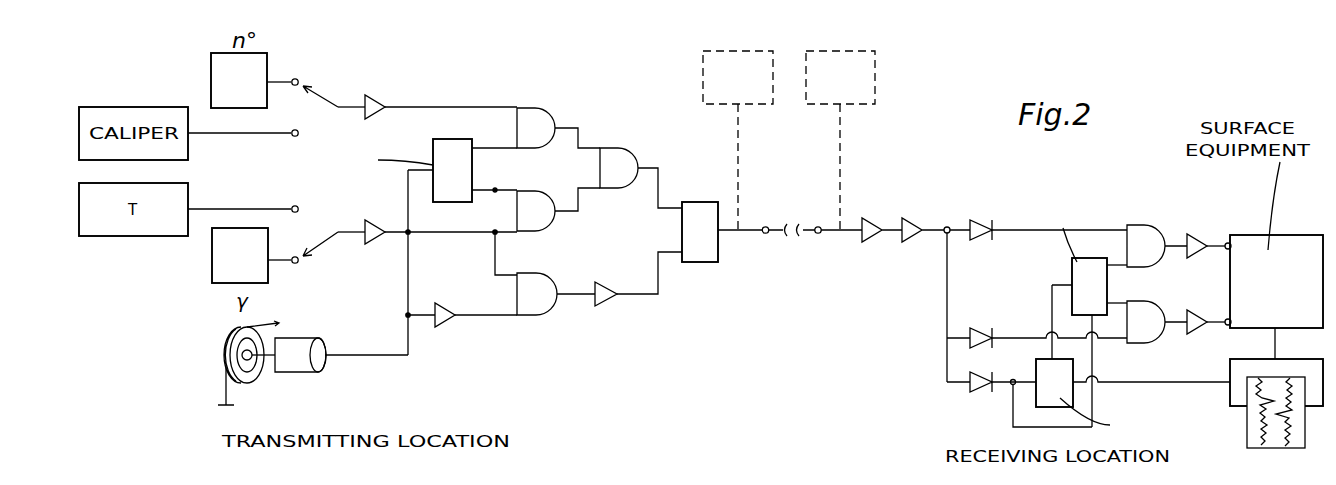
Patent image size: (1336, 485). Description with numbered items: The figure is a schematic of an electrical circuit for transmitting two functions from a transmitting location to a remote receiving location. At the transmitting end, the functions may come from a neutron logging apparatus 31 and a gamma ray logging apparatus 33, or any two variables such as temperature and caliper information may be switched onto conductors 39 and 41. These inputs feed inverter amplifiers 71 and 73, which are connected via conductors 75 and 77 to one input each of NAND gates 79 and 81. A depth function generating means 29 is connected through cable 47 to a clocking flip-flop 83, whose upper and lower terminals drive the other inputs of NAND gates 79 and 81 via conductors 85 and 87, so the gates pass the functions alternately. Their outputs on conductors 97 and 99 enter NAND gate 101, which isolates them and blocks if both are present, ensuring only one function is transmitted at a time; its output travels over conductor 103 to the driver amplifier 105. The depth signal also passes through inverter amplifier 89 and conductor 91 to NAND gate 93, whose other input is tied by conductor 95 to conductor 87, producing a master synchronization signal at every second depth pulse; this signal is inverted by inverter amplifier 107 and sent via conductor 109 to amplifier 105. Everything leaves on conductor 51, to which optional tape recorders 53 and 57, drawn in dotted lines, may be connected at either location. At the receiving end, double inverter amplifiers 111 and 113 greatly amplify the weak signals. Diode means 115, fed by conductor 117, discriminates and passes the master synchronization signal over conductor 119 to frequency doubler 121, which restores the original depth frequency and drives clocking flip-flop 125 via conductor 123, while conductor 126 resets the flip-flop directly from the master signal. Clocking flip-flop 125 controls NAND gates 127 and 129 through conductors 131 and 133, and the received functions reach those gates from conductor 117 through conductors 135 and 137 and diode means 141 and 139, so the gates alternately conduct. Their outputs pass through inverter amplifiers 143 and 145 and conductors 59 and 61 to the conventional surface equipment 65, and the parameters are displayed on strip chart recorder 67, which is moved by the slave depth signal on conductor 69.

The depth function generating means 29 is at (302, 375).
The neutron logging apparatus 31 is at (211, 60).
The gamma ray logging apparatus 33 is at (212, 262).
The conductor 39 is at (336, 104).
The conductor 41 is at (337, 230).
The cable 47 is at (363, 353).
The conductor 51 is at (735, 233).
The tape recorder 53 is at (703, 63).
The tape recorder 57 is at (875, 63).
The conductor 59 is at (1228, 243).
The conductor 61 is at (1212, 319).
The surface equipment 65 is at (1283, 235).
The strip chart recorder 67 is at (1230, 390).
The conductor 69 is at (1140, 383).
The inverter amplifier 71 is at (380, 101).
The inverter amplifier 73 is at (377, 225).
The conductor 75 is at (455, 105).
The conductor 77 is at (458, 234).
The NAND gate 79 is at (537, 107).
The NAND gate 81 is at (552, 229).
The clocking flip-flop 83 is at (437, 152).
The conductor 85 is at (490, 146).
The conductor 87 is at (488, 190).
The inverter amplifier 89 is at (447, 325).
The conductor 91 is at (493, 317).
The NAND gate 93 is at (547, 313).
The conductor 95 is at (497, 253).
The conductor 97 is at (582, 128).
The conductor 99 is at (582, 211).
The NAND gate 101 is at (617, 148).
The conductor 103 is at (660, 186).
The amplifier 105 is at (700, 263).
The inverter amplifier 107 is at (606, 306).
The conductor 109 is at (655, 296).
The inverter amplifier 111 is at (867, 220).
The inverter amplifier 113 is at (910, 220).
The diode means 115 is at (962, 388).
The conductor 117 is at (947, 356).
The conductor 119 is at (1000, 385).
The frequency doubler 121 is at (1036, 372).
The conductor 123 is at (1052, 297).
The clocking flip-flop 125 is at (1072, 268).
The conductor 126 is at (1093, 358).
The NAND gate 127 is at (1140, 225).
The NAND gate 129 is at (1143, 340).
The conductor 131 is at (1110, 258).
The conductor 133 is at (1128, 305).
The conductor 135 is at (1035, 229).
The conductor 137 is at (1010, 337).
The diode means 139 is at (975, 327).
The diode means 141 is at (975, 220).
The inverter amplifier 143 is at (1196, 236).
The inverter amplifier 145 is at (1203, 327).